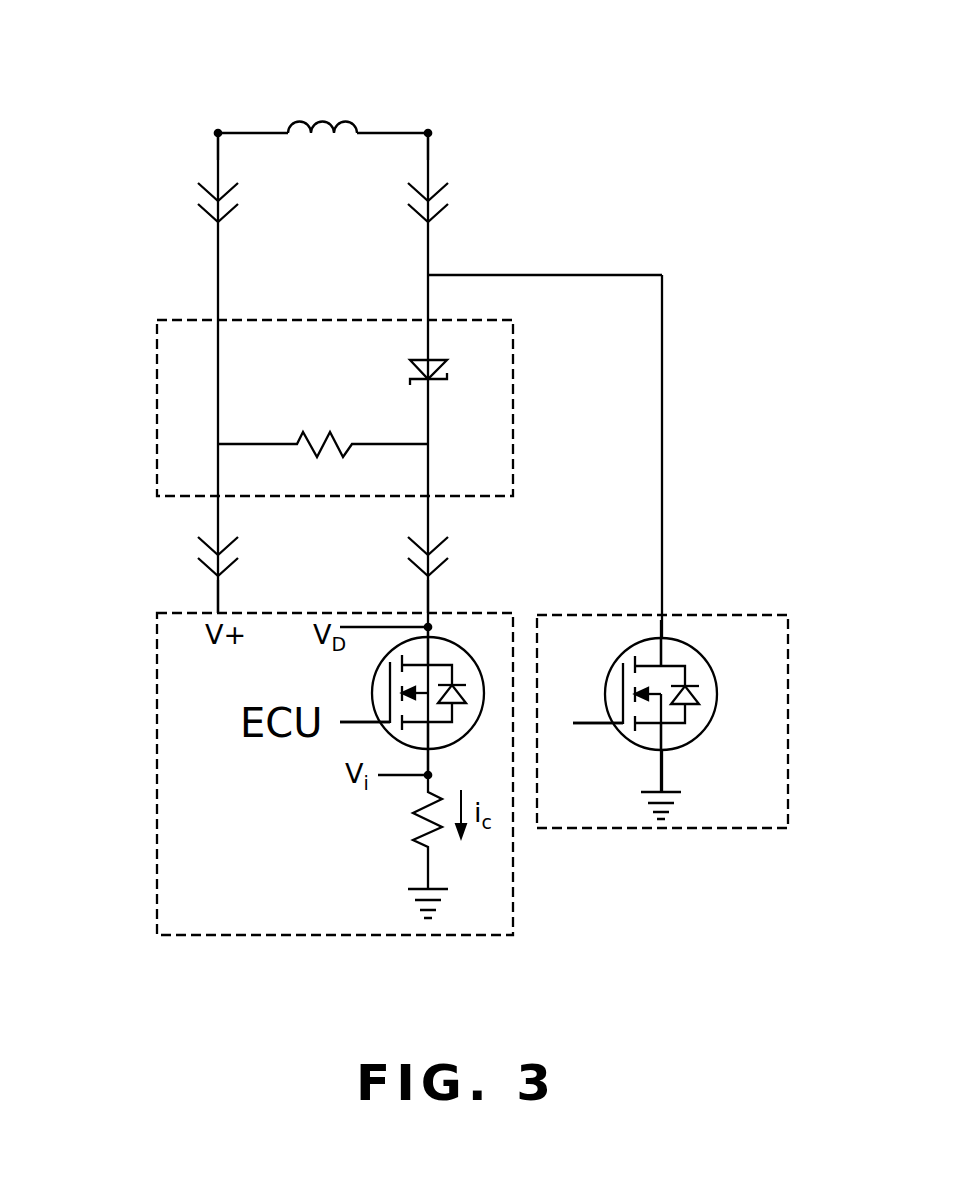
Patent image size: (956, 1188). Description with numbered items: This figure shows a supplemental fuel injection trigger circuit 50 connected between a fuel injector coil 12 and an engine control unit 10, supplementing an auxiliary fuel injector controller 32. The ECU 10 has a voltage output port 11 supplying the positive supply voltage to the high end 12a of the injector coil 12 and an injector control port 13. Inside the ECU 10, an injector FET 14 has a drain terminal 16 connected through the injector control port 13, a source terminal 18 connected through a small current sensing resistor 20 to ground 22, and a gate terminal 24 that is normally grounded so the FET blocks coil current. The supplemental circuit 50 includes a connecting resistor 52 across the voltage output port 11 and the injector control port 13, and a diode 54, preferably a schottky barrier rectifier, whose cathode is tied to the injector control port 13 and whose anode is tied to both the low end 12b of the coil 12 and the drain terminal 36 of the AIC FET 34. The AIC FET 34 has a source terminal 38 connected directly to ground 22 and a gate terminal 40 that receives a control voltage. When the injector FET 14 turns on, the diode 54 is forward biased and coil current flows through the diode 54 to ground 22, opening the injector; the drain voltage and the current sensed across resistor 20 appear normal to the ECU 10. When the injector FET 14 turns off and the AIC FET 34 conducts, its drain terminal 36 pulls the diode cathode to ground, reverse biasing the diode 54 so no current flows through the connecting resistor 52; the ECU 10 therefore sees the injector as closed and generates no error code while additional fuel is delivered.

The Engine Control Unit (ECU) 10 is at (157, 767).
The voltage output port 11 is at (218, 613).
The fuel injector coil 12 is at (317, 152).
The high end of fuel injector coil 12a is at (218, 133).
The low end of fuel injector coil 12b is at (428, 133).
The injector control port 13 is at (428, 613).
The injector FET 14 is at (485, 690).
The drain terminal 16 is at (426, 630).
The source terminal 18 is at (431, 748).
The current sensing resistor 20 is at (396, 818).
The ground 22 is at (400, 902).
The gate terminal 24 is at (382, 730).
The Auxiliary Fuel Injector Controller (AIC) 32 is at (745, 613).
The AIC FET 34 is at (717, 684).
The drain terminal of AIC FET 36 is at (661, 638).
The source terminal of AIC FET 38 is at (661, 750).
The gate terminal of AIC FET 40 is at (623, 725).
The Supplemental Fuel Injection Trigger Circuit (SFITC) 50 is at (157, 398).
The connecting resistor 52 is at (320, 412).
The diode 54 is at (452, 390).